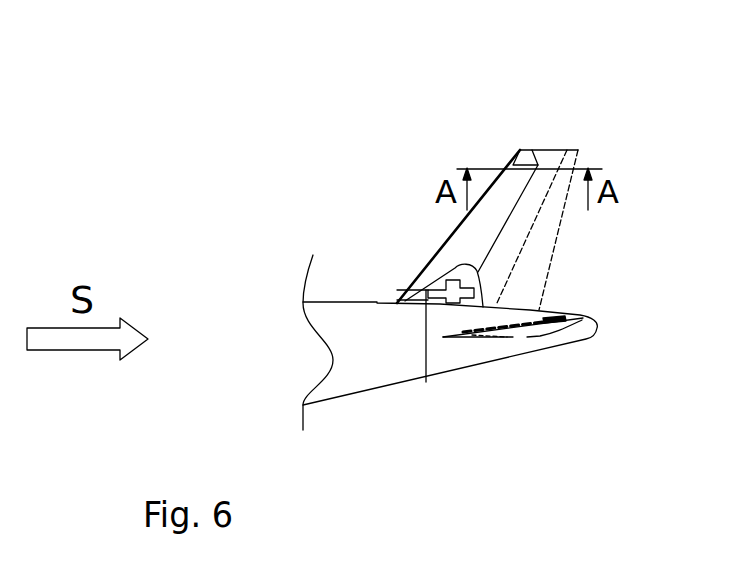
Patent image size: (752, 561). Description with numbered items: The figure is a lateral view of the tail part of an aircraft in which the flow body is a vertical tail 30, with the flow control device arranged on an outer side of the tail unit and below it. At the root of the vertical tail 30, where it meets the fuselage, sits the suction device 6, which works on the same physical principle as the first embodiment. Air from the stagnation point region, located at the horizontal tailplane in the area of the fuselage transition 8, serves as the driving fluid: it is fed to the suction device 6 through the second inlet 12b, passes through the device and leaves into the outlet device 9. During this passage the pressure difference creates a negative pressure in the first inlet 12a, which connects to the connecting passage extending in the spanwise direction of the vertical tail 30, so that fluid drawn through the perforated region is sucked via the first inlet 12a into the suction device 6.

The vertical tail 30 is at (535, 140).
The suction device 6 is at (445, 282).
The fuselage transition 8 is at (400, 288).
The first inlet 12a is at (474, 289).
The second inlet 12b is at (426, 348).
The outlet device 9 is at (470, 290).